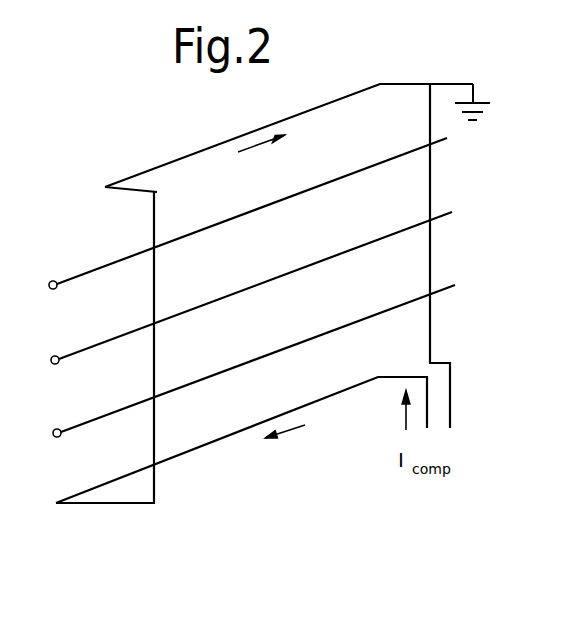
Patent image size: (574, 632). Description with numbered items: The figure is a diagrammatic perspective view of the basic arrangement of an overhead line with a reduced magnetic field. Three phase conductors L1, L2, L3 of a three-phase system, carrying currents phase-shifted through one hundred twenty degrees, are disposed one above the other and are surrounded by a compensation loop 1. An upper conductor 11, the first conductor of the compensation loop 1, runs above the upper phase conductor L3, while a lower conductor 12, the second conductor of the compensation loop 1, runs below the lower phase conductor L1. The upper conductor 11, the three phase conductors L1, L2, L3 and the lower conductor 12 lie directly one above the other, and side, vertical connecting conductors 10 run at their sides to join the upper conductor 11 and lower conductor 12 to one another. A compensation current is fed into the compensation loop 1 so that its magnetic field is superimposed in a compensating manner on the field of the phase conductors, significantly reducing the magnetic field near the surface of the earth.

The compensation loop 1 is at (182, 158).
The vertical connecting conductors 10 is at (152, 432).
The upper conductor 11 is at (320, 100).
The lower conductor 12 is at (208, 445).
The phase conductor L1 is at (239, 367).
The phase conductor L2 is at (234, 295).
The phase conductor L3 is at (230, 220).